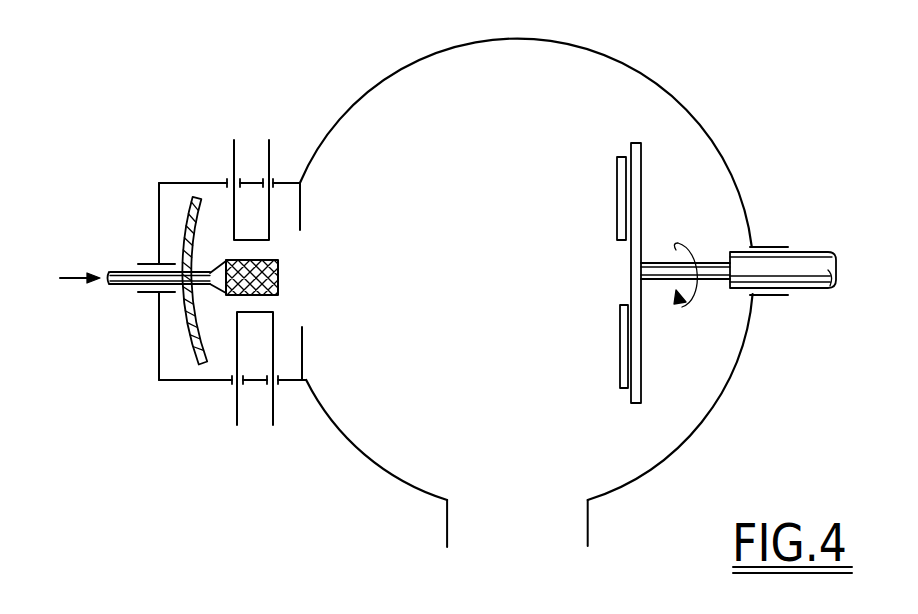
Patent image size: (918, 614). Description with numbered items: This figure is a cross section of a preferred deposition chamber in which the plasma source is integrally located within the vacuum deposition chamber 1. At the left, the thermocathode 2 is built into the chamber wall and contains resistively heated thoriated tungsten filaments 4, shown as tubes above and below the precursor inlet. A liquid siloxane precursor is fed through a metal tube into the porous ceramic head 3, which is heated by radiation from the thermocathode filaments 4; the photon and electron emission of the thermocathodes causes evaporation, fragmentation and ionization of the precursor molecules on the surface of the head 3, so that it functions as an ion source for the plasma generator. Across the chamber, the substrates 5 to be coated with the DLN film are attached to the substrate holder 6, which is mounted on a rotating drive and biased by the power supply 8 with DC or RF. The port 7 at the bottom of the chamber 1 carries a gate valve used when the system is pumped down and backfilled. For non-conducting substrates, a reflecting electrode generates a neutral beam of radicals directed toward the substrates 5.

The vacuum deposition chamber 1 is at (459, 113).
The thermocathode 2 is at (294, 223).
The porous ceramic material 3 is at (278, 277).
The thoriated tungsten filament 4 is at (234, 157).
The substrates 5 is at (617, 200).
The substrate holder 6 is at (642, 363).
The port 7 is at (518, 547).
The power supply 8 is at (187, 343).